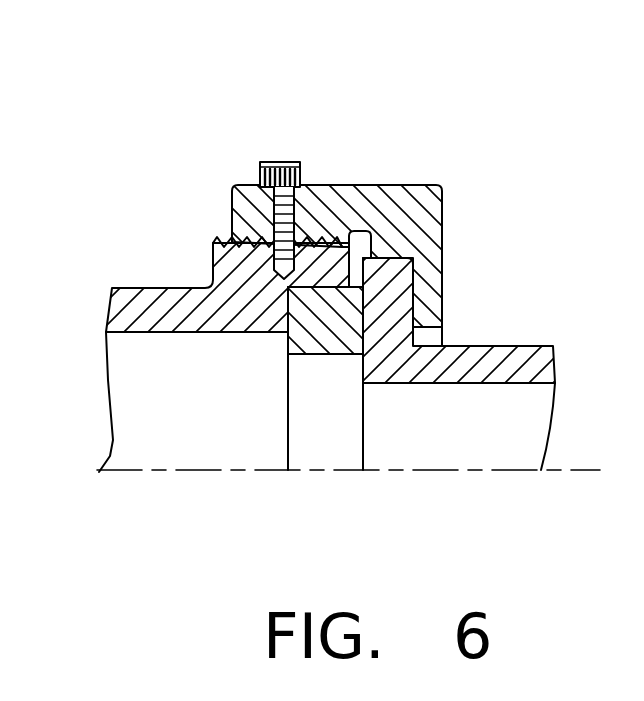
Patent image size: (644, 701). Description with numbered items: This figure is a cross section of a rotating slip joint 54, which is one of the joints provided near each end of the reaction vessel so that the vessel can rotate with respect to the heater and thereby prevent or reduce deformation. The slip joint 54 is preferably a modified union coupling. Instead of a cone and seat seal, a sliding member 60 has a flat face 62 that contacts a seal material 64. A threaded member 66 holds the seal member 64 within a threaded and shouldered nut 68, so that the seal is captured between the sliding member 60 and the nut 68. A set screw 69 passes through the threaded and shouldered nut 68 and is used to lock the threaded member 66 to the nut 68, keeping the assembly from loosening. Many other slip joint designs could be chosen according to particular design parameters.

The rotating slip joint 54 is at (417, 157).
The sliding member 60 is at (490, 344).
The flat face 62 is at (340, 228).
The seal material 64 is at (285, 345).
The threaded member 66 is at (162, 287).
The threaded and shouldered nut 68 is at (360, 185).
The set screw 69 is at (278, 160).